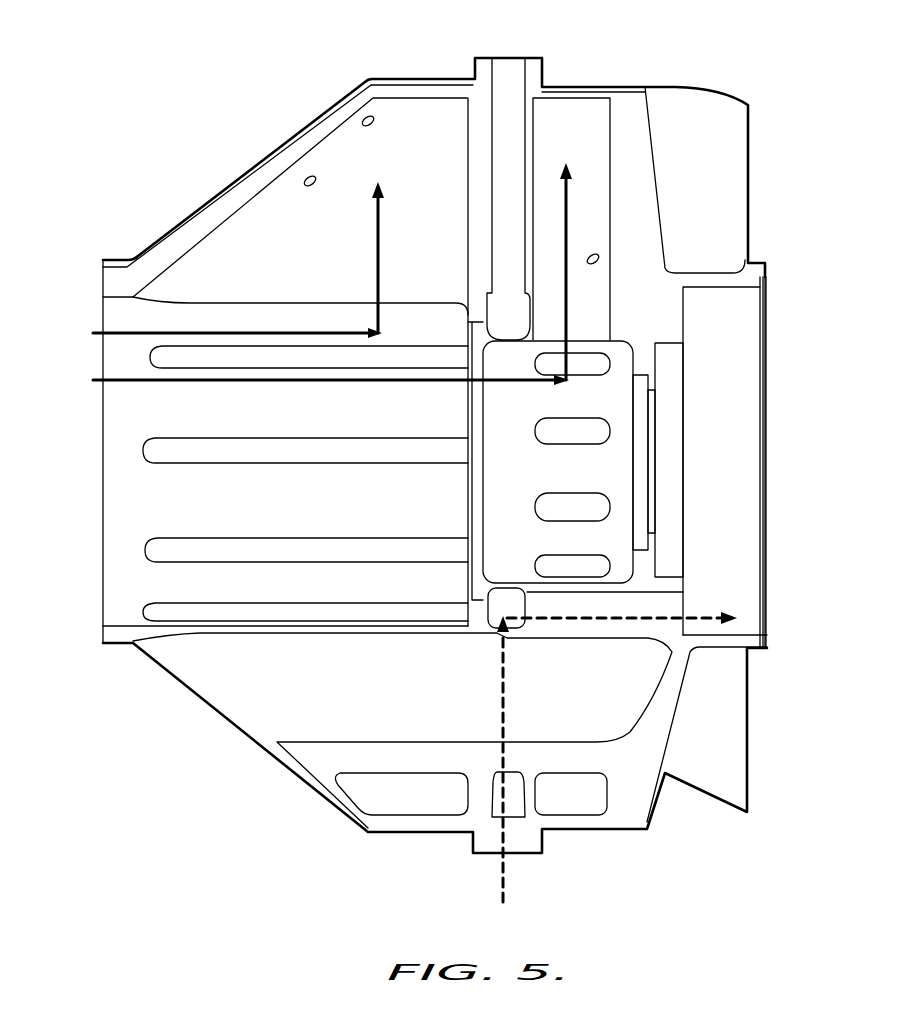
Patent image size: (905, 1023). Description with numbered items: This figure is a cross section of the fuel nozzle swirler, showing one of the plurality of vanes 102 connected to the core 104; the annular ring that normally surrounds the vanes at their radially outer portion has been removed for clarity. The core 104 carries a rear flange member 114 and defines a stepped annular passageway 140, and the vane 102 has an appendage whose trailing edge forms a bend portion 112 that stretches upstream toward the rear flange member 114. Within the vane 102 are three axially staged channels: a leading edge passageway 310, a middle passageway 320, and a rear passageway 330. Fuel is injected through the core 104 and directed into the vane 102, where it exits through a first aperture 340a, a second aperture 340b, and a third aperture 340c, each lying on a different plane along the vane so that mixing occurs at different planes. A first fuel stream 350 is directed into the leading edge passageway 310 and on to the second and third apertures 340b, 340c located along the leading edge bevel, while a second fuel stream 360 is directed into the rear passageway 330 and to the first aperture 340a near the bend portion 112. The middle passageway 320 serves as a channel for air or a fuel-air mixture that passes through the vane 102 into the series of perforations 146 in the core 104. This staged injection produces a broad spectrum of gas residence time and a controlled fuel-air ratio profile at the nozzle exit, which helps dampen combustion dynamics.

The vane 102 is at (241, 703).
The core 104 is at (752, 364).
The bend portion 112 is at (104, 282).
The rear flange member 114 is at (767, 543).
The annular passageway 140 is at (113, 518).
The series of perforations 146 is at (553, 620).
The leading edge passageway 310 is at (440, 115).
The middle passageway 320 is at (508, 72).
The rear passageway 330 is at (562, 112).
The first aperture 340a is at (600, 256).
The second aperture 340b is at (366, 119).
The third aperture 340c is at (306, 181).
The first fuel stream 350 is at (213, 264).
The second fuel stream 360 is at (307, 279).